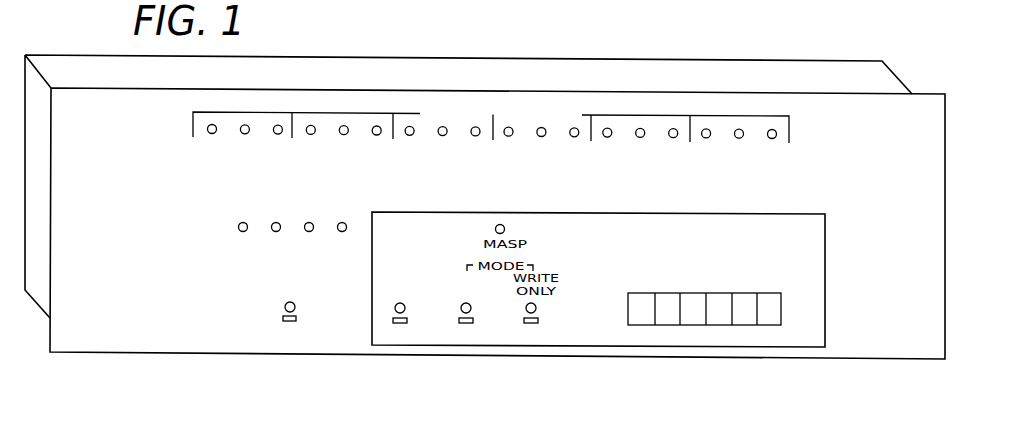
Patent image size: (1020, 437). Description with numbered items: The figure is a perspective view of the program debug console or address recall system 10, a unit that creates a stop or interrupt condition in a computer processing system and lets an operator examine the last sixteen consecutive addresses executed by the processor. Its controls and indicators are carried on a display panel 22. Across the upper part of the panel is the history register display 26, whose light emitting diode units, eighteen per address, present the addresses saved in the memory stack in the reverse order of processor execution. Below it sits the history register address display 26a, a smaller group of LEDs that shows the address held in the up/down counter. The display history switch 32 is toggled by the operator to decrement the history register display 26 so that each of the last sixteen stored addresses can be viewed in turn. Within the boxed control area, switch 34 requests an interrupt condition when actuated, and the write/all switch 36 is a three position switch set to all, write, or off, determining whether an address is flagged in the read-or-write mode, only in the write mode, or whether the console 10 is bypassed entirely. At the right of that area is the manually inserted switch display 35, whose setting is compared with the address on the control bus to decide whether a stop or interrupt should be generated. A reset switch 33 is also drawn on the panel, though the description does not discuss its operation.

The address recall system 10 is at (347, 368).
The display panel 22 is at (800, 108).
The history register display 26 is at (499, 108).
The history register address display 26a is at (260, 249).
The display history switch 32 is at (289, 326).
The reset switch 33 is at (408, 306).
The switch 34 is at (472, 307).
The switch display 35 is at (725, 327).
The write/all switch 36 is at (538, 308).